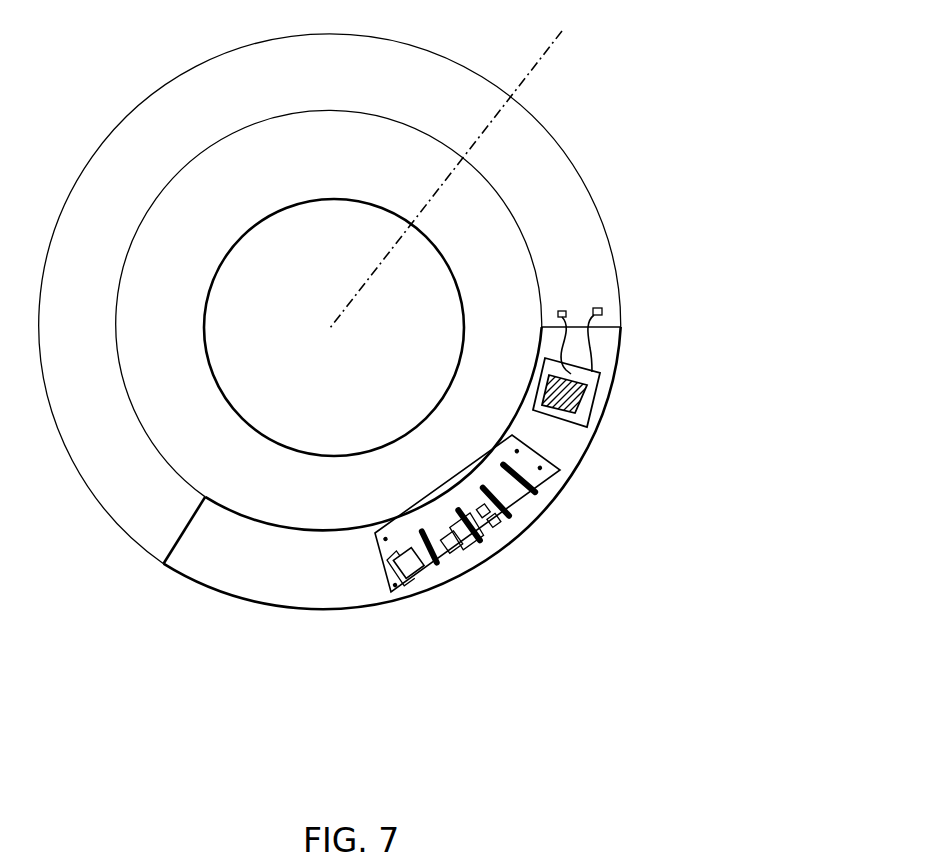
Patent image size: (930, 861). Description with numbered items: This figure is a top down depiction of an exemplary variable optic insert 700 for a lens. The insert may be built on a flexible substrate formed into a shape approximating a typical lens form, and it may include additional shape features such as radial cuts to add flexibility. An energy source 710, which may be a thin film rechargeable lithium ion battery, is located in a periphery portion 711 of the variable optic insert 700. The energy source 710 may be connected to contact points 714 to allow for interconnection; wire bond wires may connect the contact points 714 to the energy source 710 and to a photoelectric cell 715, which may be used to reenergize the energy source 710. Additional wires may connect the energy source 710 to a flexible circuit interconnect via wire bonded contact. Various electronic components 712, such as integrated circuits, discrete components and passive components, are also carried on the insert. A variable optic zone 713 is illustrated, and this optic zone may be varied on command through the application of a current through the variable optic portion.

The variable optic insert 700 is at (365, 345).
The energy source 710 is at (585, 398).
The periphery portion 711 is at (330, 299).
The electronic components 712 is at (489, 555).
The variable optic zone 713 is at (470, 171).
The contact points 714 is at (568, 358).
The photoelectric cell 715 is at (406, 564).